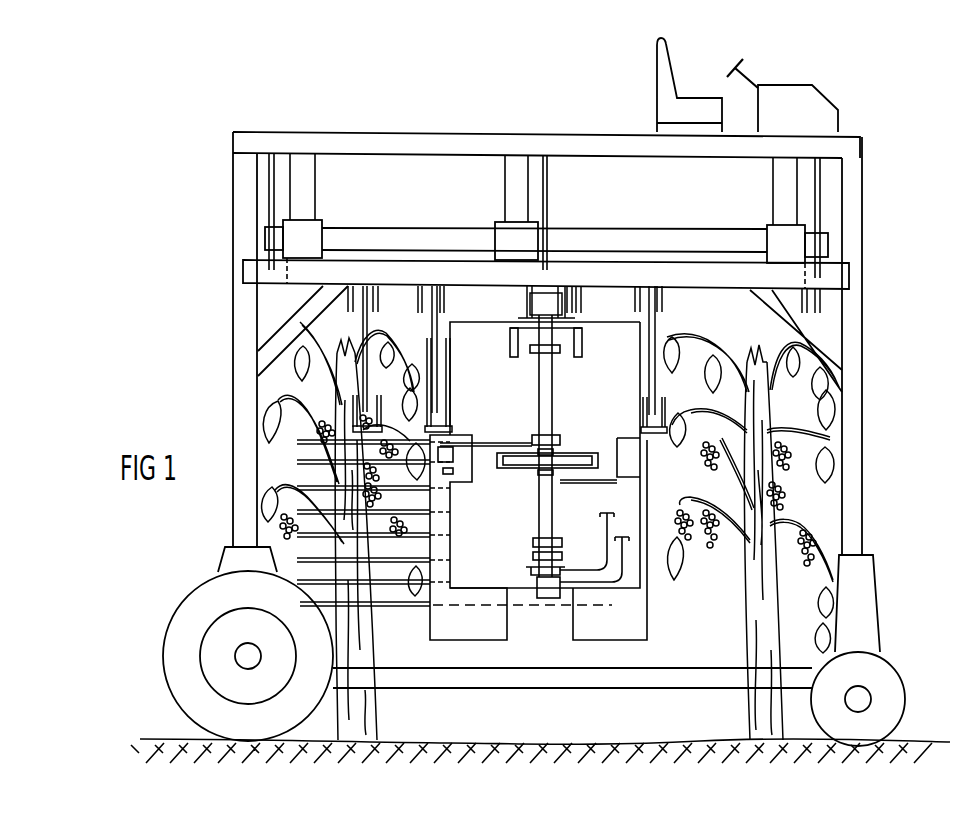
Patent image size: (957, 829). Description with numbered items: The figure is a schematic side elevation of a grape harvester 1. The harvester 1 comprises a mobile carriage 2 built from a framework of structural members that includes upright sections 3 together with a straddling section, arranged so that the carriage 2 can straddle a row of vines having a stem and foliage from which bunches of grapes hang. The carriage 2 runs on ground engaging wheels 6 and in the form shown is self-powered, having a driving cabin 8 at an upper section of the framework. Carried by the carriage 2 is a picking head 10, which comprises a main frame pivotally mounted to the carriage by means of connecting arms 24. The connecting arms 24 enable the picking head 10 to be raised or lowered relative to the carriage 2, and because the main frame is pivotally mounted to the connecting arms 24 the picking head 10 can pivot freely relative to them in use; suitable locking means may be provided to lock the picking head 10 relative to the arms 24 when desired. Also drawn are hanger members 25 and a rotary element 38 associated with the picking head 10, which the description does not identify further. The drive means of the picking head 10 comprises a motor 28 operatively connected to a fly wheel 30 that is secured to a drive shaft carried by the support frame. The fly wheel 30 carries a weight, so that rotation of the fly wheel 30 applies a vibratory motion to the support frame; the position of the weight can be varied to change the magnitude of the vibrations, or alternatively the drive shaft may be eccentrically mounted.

The harvester 1 is at (873, 194).
The mobile carriage 2 is at (861, 394).
The upright sections 3 is at (248, 392).
The ground engaging wheels 6 is at (200, 601).
The driving cabin 8 is at (787, 84).
The picking head 10 is at (685, 276).
The connecting arms 24 is at (273, 195).
The hanger rod 25 is at (380, 322).
The motor 28 is at (547, 597).
The fly wheel 30 is at (539, 513).
The rotor disc 38 is at (580, 460).